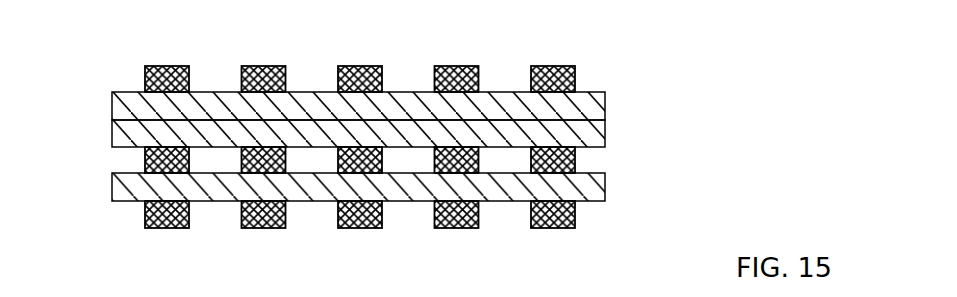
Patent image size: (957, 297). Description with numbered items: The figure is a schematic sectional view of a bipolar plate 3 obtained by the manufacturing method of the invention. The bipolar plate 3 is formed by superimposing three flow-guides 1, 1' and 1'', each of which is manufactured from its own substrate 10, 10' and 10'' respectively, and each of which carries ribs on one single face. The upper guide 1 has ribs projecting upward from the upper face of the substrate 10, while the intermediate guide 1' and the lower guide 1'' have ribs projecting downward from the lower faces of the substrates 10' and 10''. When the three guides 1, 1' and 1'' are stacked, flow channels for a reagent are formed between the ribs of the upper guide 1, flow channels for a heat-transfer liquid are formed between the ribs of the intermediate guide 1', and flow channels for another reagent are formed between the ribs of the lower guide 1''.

The upper flow-guide 1 is at (370, 76).
The intermediate flow-guide 1' is at (371, 146).
The lower flow-guide 1'' is at (374, 211).
The bipolar plate 3 is at (637, 51).
The substrate 10 is at (388, 108).
The substrate 10' is at (391, 135).
The substrate 10'' is at (395, 188).